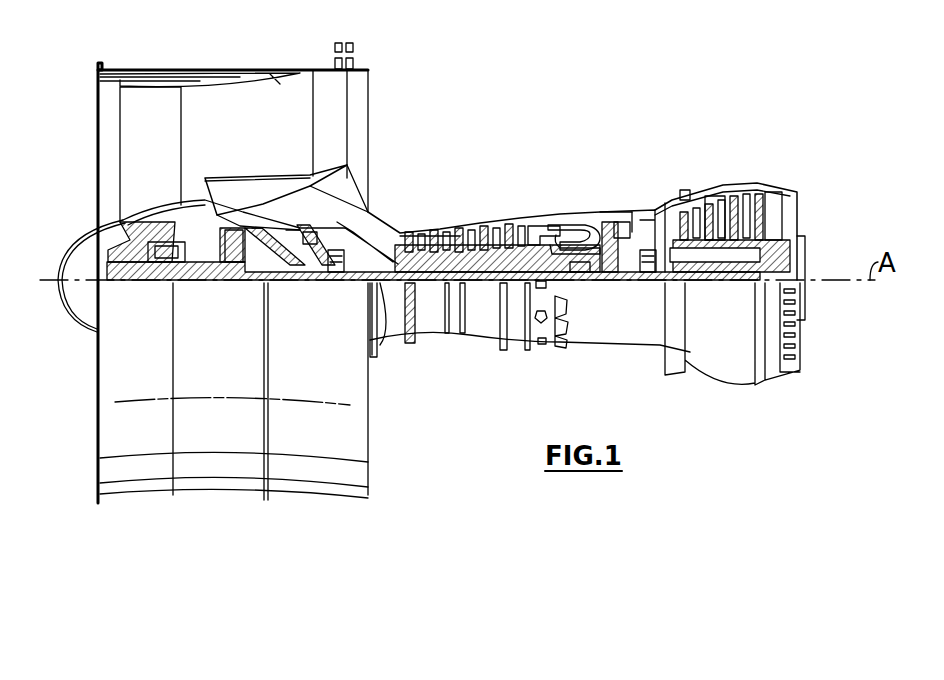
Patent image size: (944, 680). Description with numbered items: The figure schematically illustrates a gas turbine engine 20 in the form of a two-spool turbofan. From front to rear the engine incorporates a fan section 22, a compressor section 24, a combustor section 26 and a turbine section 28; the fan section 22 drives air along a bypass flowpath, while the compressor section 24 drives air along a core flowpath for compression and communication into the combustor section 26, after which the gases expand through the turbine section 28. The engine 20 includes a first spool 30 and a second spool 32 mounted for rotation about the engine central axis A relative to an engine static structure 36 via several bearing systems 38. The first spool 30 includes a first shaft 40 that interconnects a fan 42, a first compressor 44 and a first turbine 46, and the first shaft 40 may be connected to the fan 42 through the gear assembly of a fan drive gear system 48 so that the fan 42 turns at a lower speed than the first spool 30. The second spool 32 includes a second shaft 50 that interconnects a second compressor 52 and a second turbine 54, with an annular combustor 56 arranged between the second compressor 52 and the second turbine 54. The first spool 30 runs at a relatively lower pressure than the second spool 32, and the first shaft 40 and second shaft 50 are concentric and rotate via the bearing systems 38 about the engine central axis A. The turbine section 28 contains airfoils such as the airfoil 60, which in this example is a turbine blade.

The gas turbine engine 20 is at (575, 106).
The fan section 22 is at (182, 66).
The compressor section 24 is at (405, 212).
The combustor section 26 is at (577, 203).
The turbine section 28 is at (682, 178).
The first spool 30 is at (488, 284).
The second spool 32 is at (522, 230).
The engine static structure 36 is at (513, 346).
The bearing systems 38 is at (334, 274).
The first shaft 40 is at (385, 332).
The fan 42 is at (168, 166).
The first compressor 44 is at (352, 172).
The first turbine 46 is at (712, 190).
The fan drive gear system 48 is at (237, 272).
The second shaft 50 is at (578, 276).
The second compressor 52 is at (462, 233).
The second turbine 54 is at (622, 225).
The annular combustor 56 is at (562, 210).
The airfoil 60 is at (753, 196).